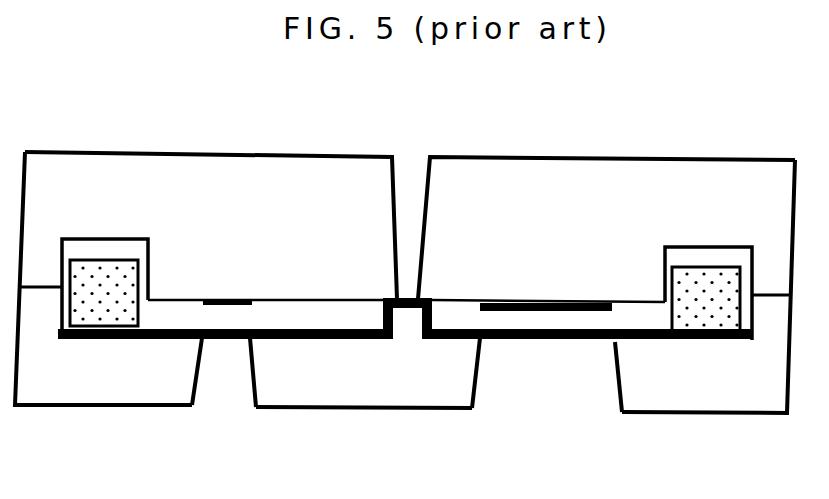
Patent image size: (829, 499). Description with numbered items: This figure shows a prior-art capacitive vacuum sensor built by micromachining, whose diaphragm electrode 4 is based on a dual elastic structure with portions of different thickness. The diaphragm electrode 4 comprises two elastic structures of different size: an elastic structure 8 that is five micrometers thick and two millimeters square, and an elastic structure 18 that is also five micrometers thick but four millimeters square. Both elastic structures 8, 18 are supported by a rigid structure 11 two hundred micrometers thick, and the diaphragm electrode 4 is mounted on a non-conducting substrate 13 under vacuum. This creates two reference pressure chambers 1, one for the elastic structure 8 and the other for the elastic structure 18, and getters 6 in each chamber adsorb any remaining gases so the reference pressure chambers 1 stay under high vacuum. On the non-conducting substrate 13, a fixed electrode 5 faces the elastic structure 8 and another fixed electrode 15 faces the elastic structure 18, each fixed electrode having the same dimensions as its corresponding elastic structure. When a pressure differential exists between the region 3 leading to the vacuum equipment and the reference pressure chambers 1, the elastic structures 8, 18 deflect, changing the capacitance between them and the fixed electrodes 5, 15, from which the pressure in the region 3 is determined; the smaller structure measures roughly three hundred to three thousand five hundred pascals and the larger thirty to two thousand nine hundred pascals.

The reference pressure chamber 1 is at (317, 315).
The region 3 is at (208, 392).
The diaphragm electrode 4 is at (312, 340).
The fixed electrode 5 is at (227, 298).
The getter 6 is at (102, 278).
The elastic structure 8 is at (217, 338).
The rigid structure 11 is at (95, 385).
The non-conducting substrate 13 is at (712, 207).
The fixed electrode 15 is at (545, 302).
The elastic structure 18 is at (577, 343).